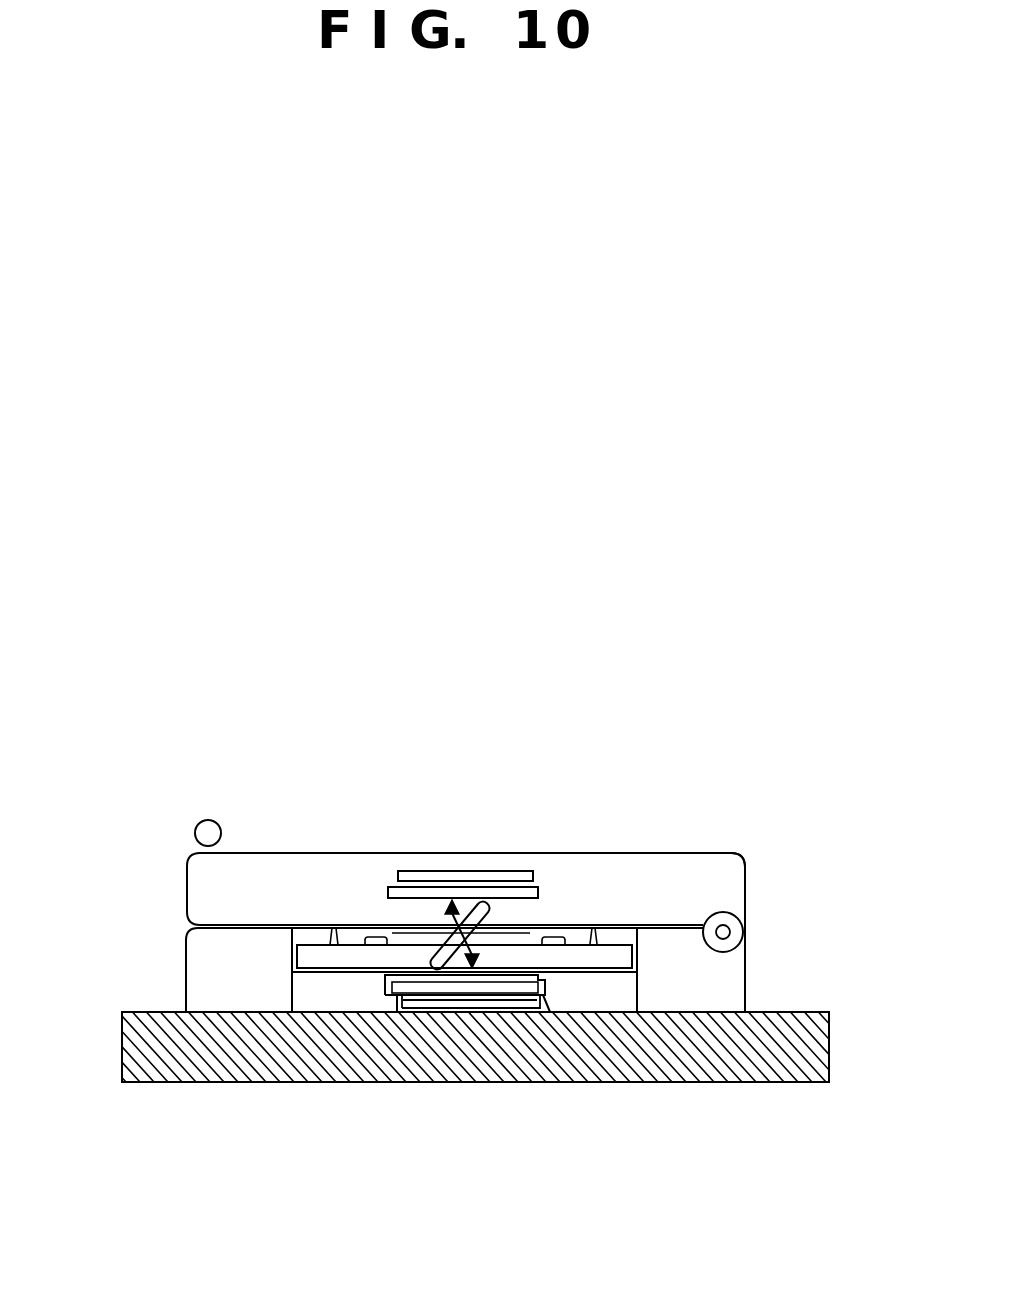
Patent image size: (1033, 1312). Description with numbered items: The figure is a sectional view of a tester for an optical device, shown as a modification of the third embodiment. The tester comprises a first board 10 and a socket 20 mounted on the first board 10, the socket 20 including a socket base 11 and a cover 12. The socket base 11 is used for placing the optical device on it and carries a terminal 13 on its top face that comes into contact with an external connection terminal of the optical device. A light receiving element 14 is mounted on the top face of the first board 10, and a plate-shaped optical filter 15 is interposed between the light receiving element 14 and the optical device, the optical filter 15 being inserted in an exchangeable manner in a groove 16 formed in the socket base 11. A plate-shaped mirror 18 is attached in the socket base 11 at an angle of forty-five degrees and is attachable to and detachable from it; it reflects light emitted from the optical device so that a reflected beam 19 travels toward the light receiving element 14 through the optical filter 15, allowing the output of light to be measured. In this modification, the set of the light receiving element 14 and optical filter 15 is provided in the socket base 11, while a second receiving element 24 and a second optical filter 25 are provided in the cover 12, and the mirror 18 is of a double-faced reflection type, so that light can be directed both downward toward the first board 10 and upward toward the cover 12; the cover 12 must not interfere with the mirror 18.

The first board 10 is at (173, 1083).
The socket base 11 is at (205, 888).
The cover 12 is at (683, 862).
The terminal 13 is at (373, 937).
The light receiving element 14 is at (490, 1002).
The optical filter 15 is at (422, 1000).
The groove 16 is at (550, 1005).
The mirror 18 is at (482, 903).
The beam 19 is at (453, 870).
The socket 20 is at (737, 843).
The receiving element 24 is at (474, 870).
The optical filter 25 is at (393, 887).